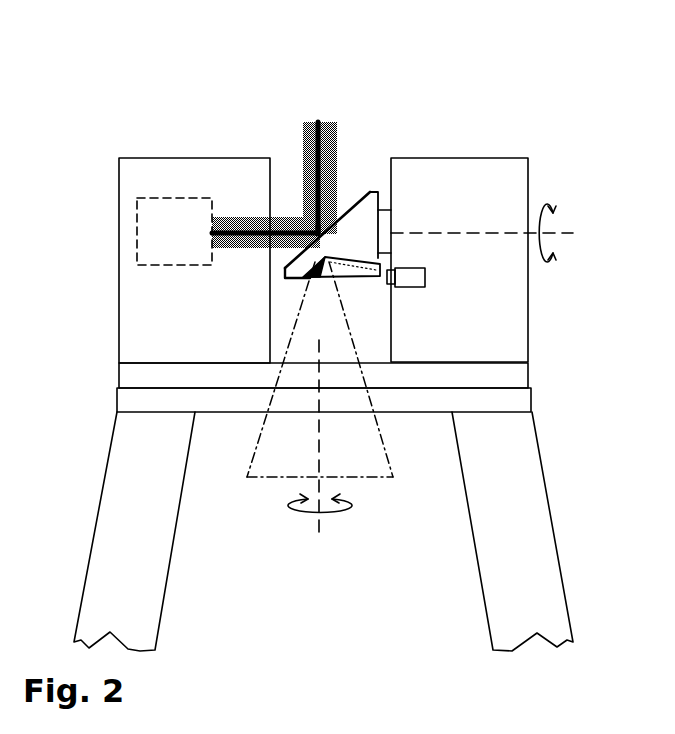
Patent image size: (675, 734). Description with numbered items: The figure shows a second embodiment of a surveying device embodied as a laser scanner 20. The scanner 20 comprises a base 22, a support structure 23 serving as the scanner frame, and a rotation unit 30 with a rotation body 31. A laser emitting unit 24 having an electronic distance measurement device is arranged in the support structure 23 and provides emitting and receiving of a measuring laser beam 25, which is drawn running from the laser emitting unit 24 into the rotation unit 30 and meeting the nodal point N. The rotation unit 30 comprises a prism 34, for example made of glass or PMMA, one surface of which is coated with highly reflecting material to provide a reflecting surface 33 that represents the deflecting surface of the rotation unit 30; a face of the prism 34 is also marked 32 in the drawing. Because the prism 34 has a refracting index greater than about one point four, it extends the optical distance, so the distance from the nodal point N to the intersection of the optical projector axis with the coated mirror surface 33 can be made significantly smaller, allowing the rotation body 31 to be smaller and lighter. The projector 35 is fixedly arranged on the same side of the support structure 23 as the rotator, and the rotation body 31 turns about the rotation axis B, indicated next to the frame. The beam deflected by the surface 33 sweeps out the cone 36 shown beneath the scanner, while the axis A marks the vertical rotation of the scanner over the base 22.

The laser scanner 20 is at (320, 333).
The base 22 is at (360, 391).
The support structure 23 is at (146, 238).
The laser emitting unit 24 is at (117, 220).
The measuring laser beam 25 is at (274, 163).
The nodal point N is at (260, 172).
The rotation unit 30 is at (315, 198).
The rotation body 31 is at (357, 161).
The reflective surface 32 is at (326, 156).
The reflecting surface 33 is at (203, 285).
The prism 34 is at (453, 304).
The projector 35 is at (427, 281).
The scan cone 36 is at (344, 397).
The axis of rotation A is at (288, 444).
The rotation axis B is at (504, 224).